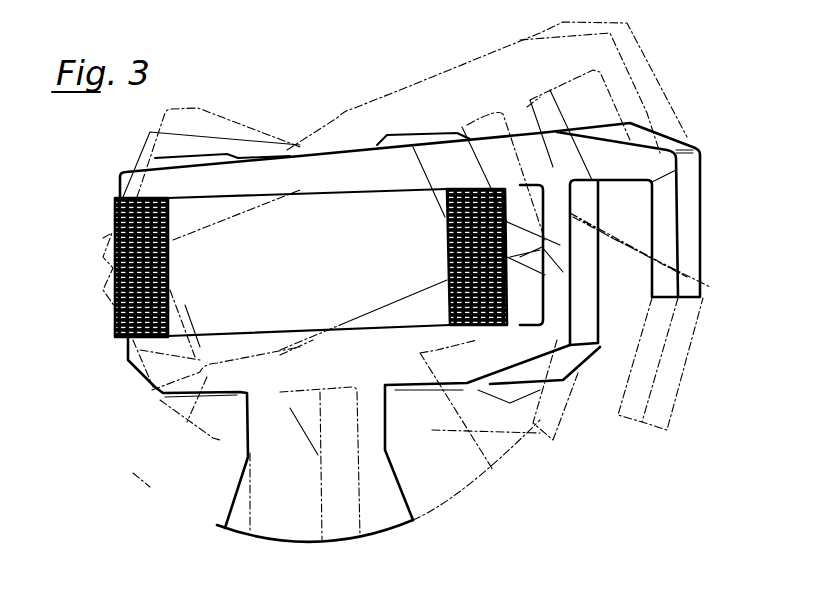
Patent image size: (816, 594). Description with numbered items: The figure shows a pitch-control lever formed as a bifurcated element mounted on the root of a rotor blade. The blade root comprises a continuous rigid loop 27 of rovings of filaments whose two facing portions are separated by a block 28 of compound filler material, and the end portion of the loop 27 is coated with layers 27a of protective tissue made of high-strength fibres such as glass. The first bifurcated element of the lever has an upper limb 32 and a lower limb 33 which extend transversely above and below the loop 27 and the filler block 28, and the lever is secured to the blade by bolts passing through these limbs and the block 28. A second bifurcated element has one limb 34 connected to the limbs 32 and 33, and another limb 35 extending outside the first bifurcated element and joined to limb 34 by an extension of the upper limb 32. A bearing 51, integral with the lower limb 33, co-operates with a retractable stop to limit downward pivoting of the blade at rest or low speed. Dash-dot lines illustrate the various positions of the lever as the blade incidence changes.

The loop of rovings of filaments 27 is at (115, 308).
The layers of protective tissue 27a is at (117, 217).
The block of filler material 28 is at (330, 185).
The upper limb 32 is at (407, 170).
The lower limb 33 is at (155, 390).
The limb of second bifurcated element 34 is at (580, 300).
The other limb of second bifurcated element 35 is at (697, 250).
The bearing 51 is at (390, 518).